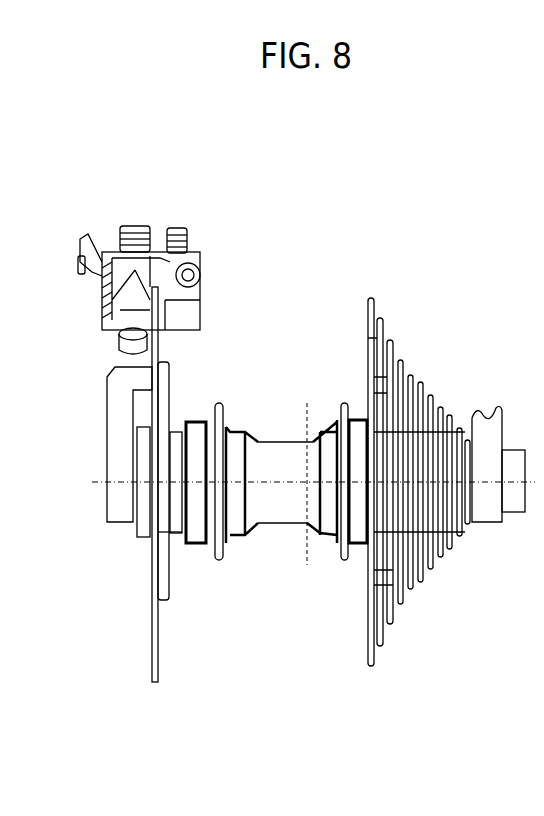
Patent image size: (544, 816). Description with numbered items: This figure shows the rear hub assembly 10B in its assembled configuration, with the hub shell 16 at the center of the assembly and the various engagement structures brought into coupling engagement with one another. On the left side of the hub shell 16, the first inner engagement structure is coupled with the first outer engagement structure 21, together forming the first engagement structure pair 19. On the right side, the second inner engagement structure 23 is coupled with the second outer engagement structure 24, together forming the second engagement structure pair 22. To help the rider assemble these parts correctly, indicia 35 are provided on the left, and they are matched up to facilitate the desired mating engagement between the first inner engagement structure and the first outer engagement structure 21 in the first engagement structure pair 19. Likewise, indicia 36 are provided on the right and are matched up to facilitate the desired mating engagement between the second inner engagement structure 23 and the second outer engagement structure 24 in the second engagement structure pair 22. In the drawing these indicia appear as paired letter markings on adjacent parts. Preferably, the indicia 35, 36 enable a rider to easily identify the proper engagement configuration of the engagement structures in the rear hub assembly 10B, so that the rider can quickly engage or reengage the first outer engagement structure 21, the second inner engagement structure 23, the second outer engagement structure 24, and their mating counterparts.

The rear hub assembly 10B is at (328, 722).
The hub shell 16 is at (282, 484).
The first engagement structure pair 19 is at (235, 415).
The first outer engagement structure 21 is at (209, 556).
The second engagement structure pair 22 is at (334, 416).
The second inner engagement structure 23 is at (323, 496).
The second outer engagement structure 24 is at (351, 556).
The indicia 35 is at (196, 462).
The indicia 36 is at (359, 462).